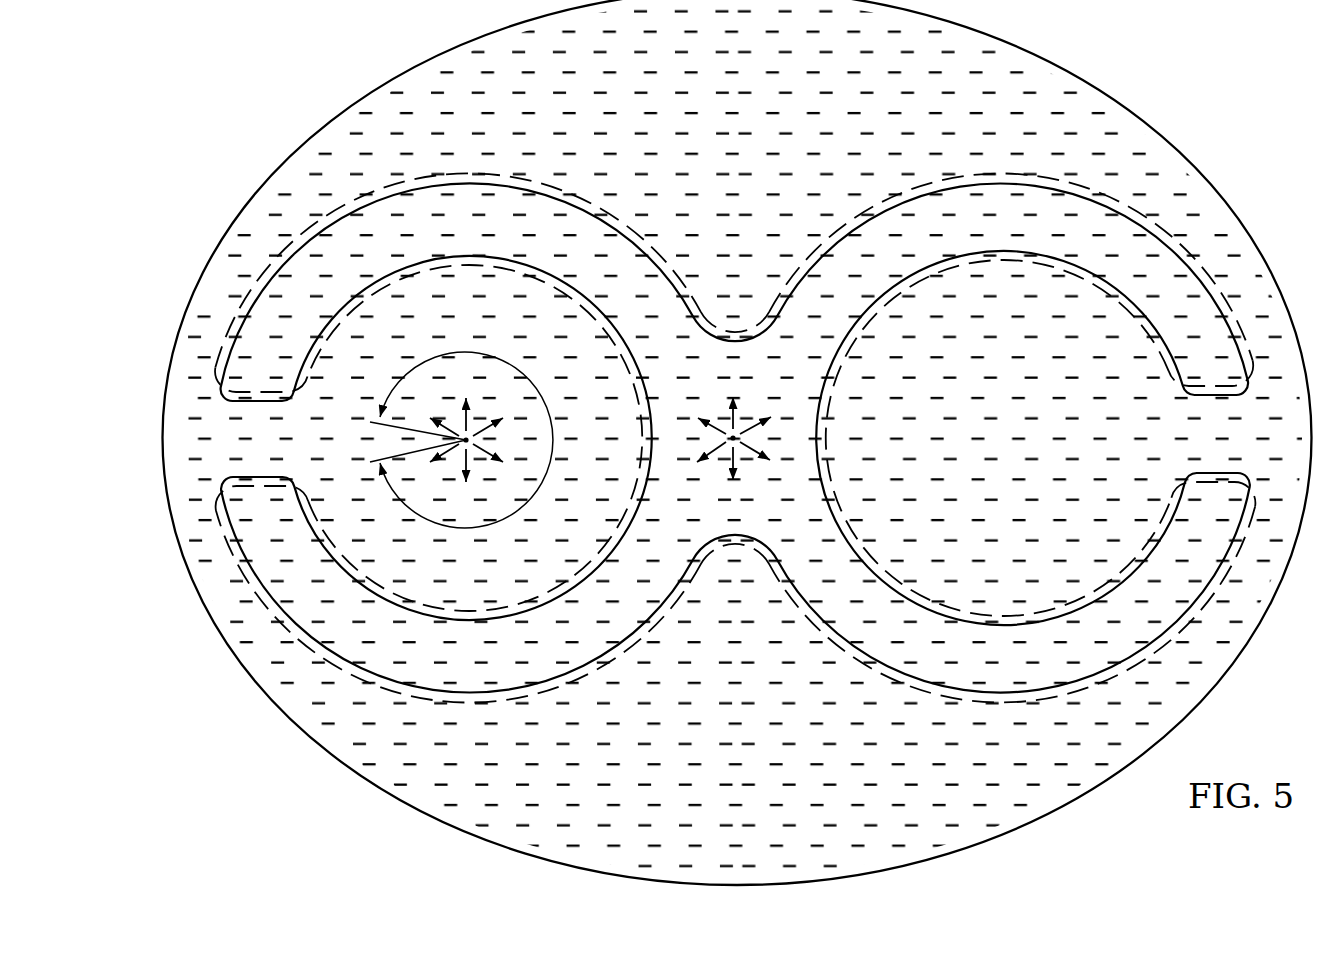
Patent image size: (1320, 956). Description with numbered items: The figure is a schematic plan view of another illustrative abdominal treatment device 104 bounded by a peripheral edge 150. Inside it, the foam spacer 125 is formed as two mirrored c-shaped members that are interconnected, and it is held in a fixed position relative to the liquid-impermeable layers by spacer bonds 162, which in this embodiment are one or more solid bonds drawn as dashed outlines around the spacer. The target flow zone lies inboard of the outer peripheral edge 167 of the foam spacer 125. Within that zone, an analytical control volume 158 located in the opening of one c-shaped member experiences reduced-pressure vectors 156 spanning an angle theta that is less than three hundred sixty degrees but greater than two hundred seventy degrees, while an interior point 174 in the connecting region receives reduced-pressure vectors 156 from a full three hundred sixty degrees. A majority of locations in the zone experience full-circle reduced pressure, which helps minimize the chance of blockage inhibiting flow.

The abdominal treatment device 104 is at (1182, 149).
The foam spacer 125 is at (985, 202).
The peripheral edge 150 is at (165, 478).
The reduced-pressure vectors 156 is at (469, 464).
The analytical control volume 158 is at (472, 430).
The spacer bonds 162 is at (440, 178).
The outer peripheral edge of the foam spacer 167 is at (1200, 277).
The interior point 174 is at (725, 447).